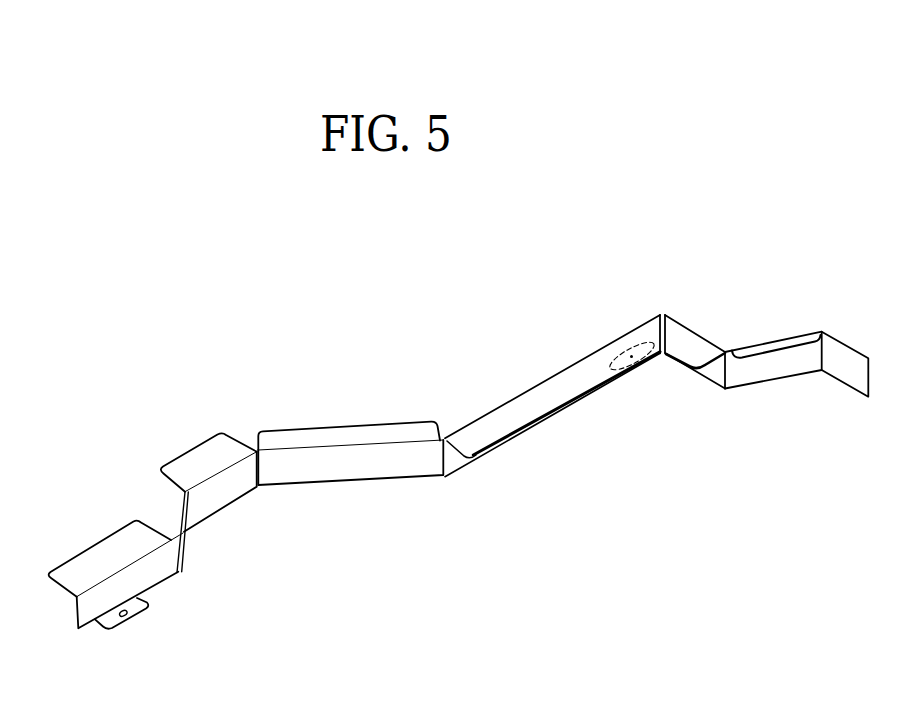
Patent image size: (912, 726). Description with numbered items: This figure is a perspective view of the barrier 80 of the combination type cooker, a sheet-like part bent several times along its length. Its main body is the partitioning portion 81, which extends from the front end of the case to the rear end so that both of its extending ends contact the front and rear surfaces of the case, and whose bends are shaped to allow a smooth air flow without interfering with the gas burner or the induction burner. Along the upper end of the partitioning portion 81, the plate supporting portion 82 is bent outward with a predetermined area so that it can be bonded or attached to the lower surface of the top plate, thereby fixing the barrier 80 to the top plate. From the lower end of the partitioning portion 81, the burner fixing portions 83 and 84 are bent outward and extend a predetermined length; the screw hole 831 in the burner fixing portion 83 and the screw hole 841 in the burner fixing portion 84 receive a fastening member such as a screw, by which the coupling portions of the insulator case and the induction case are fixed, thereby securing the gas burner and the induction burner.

The barrier 80 is at (300, 372).
The partitioning portion 81 is at (378, 468).
The plate supporting portion 82 is at (542, 401).
The burner fixing portion 83 is at (120, 622).
The screw hole 831 is at (133, 620).
The burner fixing portion 84 is at (632, 361).
The screw hole 841 is at (626, 357).